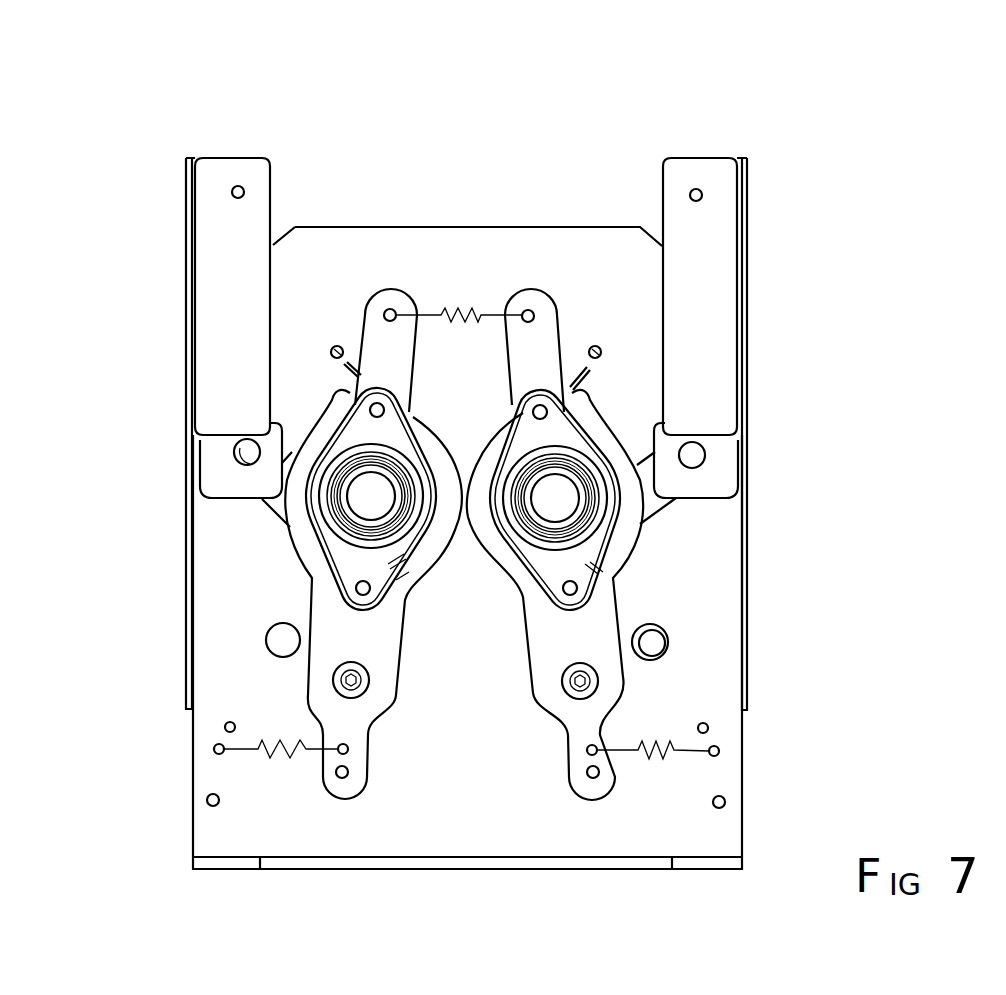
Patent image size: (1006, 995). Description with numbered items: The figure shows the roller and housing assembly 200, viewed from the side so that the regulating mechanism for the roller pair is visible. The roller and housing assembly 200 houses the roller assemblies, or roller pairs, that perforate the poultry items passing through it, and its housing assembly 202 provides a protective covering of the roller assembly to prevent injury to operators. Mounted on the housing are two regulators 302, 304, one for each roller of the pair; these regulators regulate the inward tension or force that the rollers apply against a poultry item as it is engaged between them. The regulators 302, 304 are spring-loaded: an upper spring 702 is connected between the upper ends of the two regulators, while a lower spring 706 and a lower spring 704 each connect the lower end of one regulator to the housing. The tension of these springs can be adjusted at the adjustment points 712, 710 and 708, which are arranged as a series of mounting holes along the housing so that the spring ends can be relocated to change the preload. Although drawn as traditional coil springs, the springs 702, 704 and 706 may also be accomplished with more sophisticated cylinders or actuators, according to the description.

The roller and housing assembly 200 is at (737, 105).
The housing assembly 202 is at (756, 381).
The regulator 302 is at (300, 533).
The regulator 304 is at (633, 516).
The spring 702 is at (461, 302).
The spring 704 is at (668, 738).
The spring 706 is at (243, 755).
The adjustment point 708 is at (710, 728).
The adjustment point 710 is at (722, 751).
The adjustment point 712 is at (727, 802).